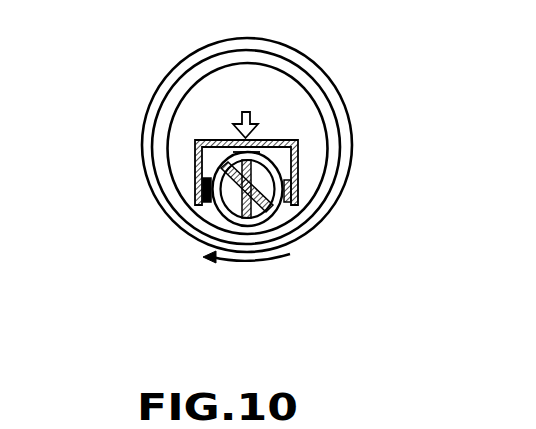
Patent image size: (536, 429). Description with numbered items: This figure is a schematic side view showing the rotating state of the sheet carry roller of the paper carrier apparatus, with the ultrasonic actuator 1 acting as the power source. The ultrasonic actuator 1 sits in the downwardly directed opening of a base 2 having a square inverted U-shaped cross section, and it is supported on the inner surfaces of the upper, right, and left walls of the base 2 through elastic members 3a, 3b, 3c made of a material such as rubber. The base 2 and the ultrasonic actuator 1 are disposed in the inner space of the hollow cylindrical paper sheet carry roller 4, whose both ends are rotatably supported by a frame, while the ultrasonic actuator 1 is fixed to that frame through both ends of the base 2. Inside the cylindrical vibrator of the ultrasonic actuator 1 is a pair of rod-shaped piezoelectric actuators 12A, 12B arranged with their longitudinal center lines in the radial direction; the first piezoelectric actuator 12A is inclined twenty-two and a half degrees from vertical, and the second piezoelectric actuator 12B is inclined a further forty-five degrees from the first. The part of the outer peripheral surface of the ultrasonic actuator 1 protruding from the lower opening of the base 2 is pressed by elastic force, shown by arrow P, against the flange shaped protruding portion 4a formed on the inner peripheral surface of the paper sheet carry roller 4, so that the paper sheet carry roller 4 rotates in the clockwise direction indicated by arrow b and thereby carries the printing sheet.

The ultrasonic actuator 1 is at (213, 201).
The base 2 is at (298, 157).
The elastic member 3a is at (197, 187).
The elastic member 3b is at (291, 197).
The elastic member 3c is at (263, 140).
The paper sheet carry roller 4 is at (322, 69).
The protruding portion 4a is at (163, 130).
The first piezoelectric actuator 12A is at (272, 207).
The second piezoelectric actuator 12B is at (230, 213).
The arrow P is at (245, 109).
The arrow b is at (253, 263).